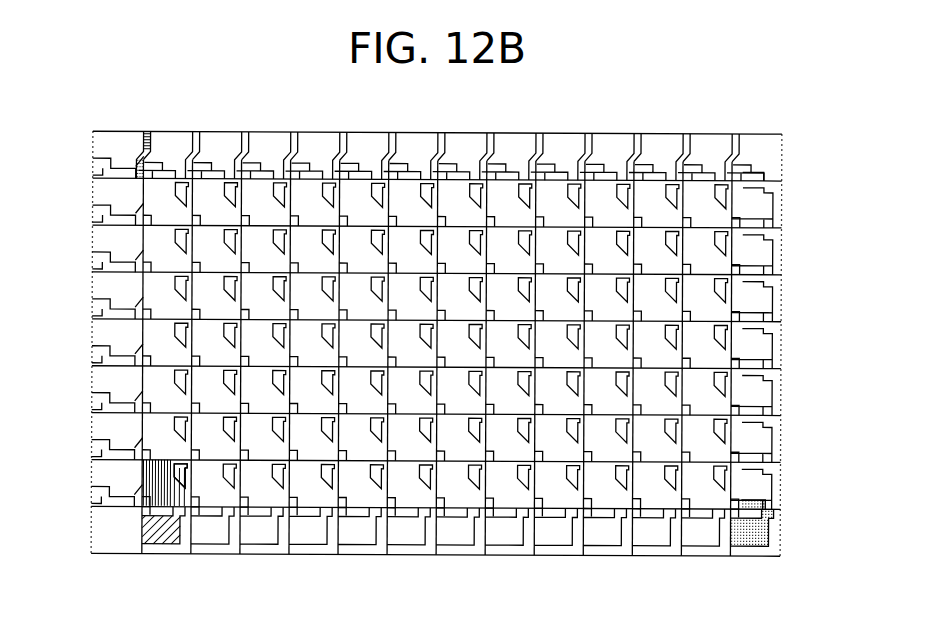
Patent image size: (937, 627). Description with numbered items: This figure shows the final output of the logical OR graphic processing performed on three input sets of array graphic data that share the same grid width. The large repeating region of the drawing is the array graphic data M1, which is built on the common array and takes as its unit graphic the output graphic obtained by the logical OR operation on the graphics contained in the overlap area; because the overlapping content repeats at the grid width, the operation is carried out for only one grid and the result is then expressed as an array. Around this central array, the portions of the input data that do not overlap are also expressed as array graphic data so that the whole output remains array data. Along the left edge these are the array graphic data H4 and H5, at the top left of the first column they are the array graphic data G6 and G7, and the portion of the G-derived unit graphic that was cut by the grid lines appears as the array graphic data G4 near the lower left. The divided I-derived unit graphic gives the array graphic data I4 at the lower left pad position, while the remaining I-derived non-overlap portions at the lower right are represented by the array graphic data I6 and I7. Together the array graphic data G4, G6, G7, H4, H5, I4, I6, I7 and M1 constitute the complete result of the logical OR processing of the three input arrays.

The array graphic data H5 is at (94, 166).
The array graphic data G6 is at (137, 163).
The array graphic data G7 is at (145, 160).
The array graphic data G4 is at (143, 493).
The array graphic data H4 is at (96, 500).
The array graphic data I4 is at (162, 538).
The array graphic data M1 is at (181, 495).
The array graphic data I7 is at (768, 502).
The array graphic data I6 is at (772, 536).